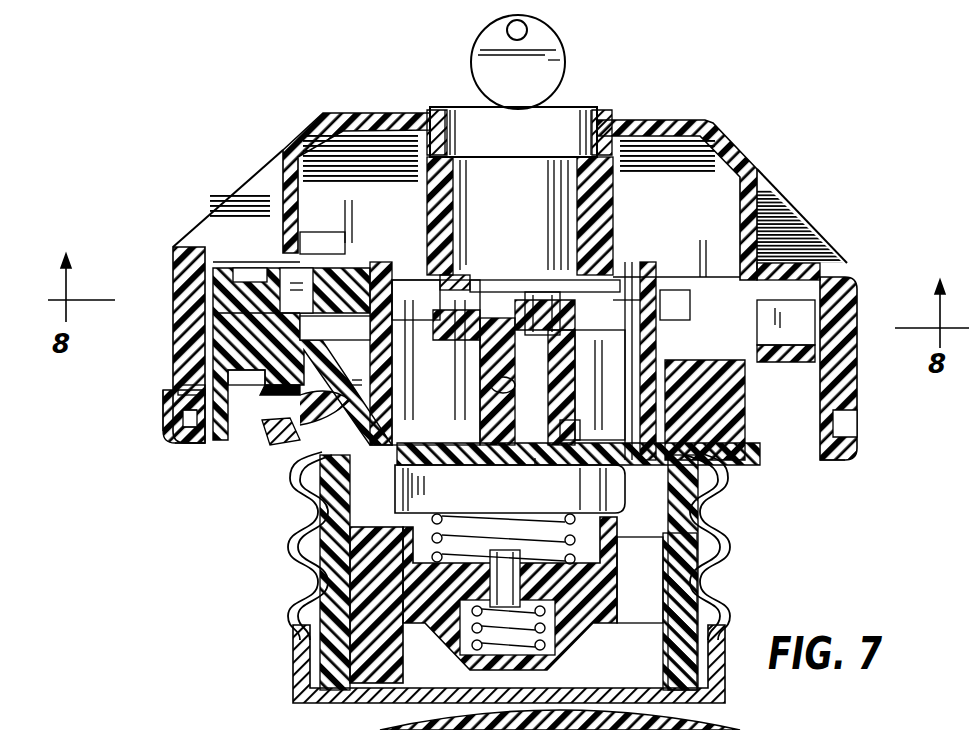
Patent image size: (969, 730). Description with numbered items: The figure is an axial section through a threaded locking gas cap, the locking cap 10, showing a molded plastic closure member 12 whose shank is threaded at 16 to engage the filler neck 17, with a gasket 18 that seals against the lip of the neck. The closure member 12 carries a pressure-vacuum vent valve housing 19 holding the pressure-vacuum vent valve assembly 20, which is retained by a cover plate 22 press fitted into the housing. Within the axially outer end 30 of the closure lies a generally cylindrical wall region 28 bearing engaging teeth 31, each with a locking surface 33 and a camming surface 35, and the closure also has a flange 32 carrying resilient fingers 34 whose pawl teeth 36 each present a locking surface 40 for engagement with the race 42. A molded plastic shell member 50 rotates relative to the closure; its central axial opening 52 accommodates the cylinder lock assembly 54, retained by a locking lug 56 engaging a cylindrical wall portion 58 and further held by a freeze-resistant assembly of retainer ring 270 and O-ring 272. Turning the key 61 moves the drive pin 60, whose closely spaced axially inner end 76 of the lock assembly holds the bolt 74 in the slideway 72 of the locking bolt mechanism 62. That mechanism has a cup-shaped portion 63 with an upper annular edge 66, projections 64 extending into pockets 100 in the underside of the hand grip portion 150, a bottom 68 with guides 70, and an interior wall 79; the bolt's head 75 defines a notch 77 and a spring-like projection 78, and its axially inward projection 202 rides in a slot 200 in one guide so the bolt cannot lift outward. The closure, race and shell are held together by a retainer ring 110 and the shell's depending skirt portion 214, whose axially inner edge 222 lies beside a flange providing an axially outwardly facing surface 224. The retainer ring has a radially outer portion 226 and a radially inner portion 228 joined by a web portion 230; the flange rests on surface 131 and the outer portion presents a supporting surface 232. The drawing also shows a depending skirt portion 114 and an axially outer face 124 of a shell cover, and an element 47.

The locking cap 10 is at (805, 200).
The closure member 12 is at (300, 566).
The threads 16 is at (320, 482).
The filler neck 17 is at (295, 632).
The gasket 18 is at (270, 420).
The pressure-vacuum vent valve housing 19 is at (614, 598).
The pressure-vacuum vent valve assembly 20 is at (585, 535).
The cover plate 22 is at (510, 489).
The generally cylindrical wall region 28 is at (725, 495).
The axially outer end of closure 30 is at (320, 450).
The engaging teeth 31 is at (712, 380).
The flange 32 is at (222, 337).
The locking surface 33 is at (665, 390).
The resilient fingers 34 is at (843, 378).
The camming surface 35 is at (380, 405).
The pawl teeth 36 is at (838, 355).
The locking surface 40 is at (790, 322).
The race 42 is at (185, 278).
The lug 47 is at (330, 258).
The shell member 50 is at (280, 215).
The central axial opening 52 is at (577, 113).
The cylinder lock assembly 54 is at (514, 215).
The locking lug 56 is at (462, 278).
The cylindrical wall portion 58 is at (432, 205).
The drive pin 60 is at (540, 300).
The key 61 is at (552, 70).
The locking bolt mechanism 62 is at (365, 300).
The cup-shaped portion 63 is at (372, 328).
The projections 64 is at (362, 248).
The upper annular edge 66 is at (617, 258).
The bottom 68 is at (548, 460).
The guides 70 is at (490, 420).
The bolt slideway 72 is at (486, 389).
The bolt 74 is at (520, 345).
The head 75 is at (478, 320).
The axially inner end of lock assembly 76 is at (498, 292).
The notch 77 is at (599, 385).
The spring-like projection 78 is at (440, 320).
The interior wall 79 is at (436, 362).
The pockets 100 is at (372, 215).
The retainer ring 110 is at (178, 440).
The depending skirt portion 114 is at (770, 402).
The axially outer face 124 is at (426, 480).
The surface 131 is at (207, 358).
The hand grip portion 150 is at (300, 140).
The slot 200 is at (582, 489).
The axially inward projection 202 is at (565, 440).
The depending skirt portion 214 is at (190, 392).
The axially inner edge 222 is at (190, 440).
The axially outwardly facing surface 224 is at (175, 398).
The radially outer portion 226 is at (168, 412).
The radially inner portion 228 is at (255, 440).
The web portion 230 is at (205, 445).
The surface 232 is at (246, 379).
The retainer ring 270 is at (600, 122).
The O-ring 272 is at (608, 140).